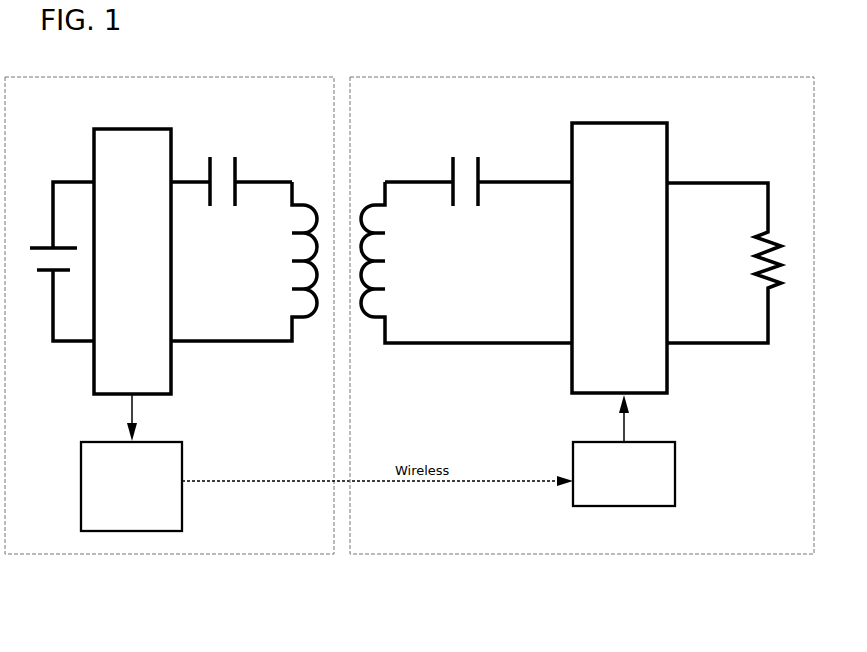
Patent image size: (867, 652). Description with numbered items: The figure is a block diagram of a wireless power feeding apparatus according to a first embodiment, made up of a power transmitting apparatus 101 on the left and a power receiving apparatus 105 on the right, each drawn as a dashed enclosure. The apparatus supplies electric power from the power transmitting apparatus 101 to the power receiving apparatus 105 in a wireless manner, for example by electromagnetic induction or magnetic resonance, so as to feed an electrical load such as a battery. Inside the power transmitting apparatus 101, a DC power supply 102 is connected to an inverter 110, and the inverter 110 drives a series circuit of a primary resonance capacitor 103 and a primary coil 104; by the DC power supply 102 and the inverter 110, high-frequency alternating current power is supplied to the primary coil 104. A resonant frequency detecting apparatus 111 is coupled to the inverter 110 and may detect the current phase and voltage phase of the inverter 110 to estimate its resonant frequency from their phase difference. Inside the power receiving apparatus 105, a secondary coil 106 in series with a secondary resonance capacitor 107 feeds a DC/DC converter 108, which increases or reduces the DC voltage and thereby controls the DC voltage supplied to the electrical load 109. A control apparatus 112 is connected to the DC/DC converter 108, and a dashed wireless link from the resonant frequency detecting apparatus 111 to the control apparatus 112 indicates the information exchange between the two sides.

The power transmitting apparatus 101 is at (106, 78).
The DC power supply 102 is at (43, 244).
The primary resonance capacitor 103 is at (237, 163).
The primary coil 104 is at (304, 287).
The power receiving apparatus 105 is at (673, 77).
The secondary coil 106 is at (383, 256).
The secondary resonance capacitor 107 is at (480, 164).
The DC/DC converter 108 is at (597, 122).
The electrical load 109 is at (754, 232).
The inverter 110 is at (143, 129).
The resonant frequency detecting apparatus 111 is at (184, 455).
The control apparatus 112 is at (678, 468).